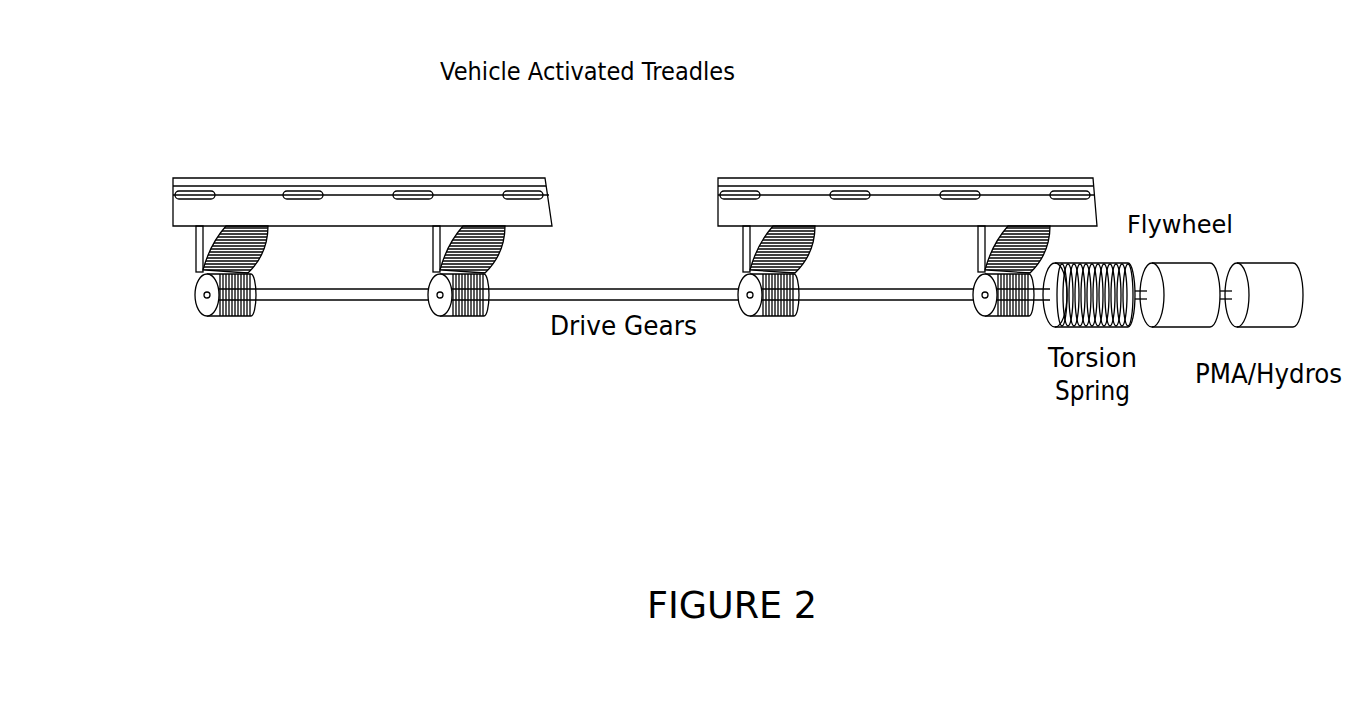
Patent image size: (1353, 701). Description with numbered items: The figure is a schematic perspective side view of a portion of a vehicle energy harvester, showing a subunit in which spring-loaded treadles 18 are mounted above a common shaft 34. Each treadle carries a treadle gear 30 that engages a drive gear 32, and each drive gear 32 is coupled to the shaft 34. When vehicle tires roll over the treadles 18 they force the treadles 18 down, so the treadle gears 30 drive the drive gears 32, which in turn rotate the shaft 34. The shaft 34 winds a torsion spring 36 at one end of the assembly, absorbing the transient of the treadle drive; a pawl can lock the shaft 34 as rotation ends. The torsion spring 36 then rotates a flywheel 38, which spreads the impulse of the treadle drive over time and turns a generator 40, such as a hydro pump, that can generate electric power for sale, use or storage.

The spring-loaded treadle 18 is at (362, 185).
The treadle gear 30 is at (230, 242).
The drive gear 32 is at (472, 317).
The shaft 34 is at (323, 301).
The torsion spring 36 is at (1110, 268).
The flywheel 38 is at (1187, 317).
The generator 40 is at (1280, 276).